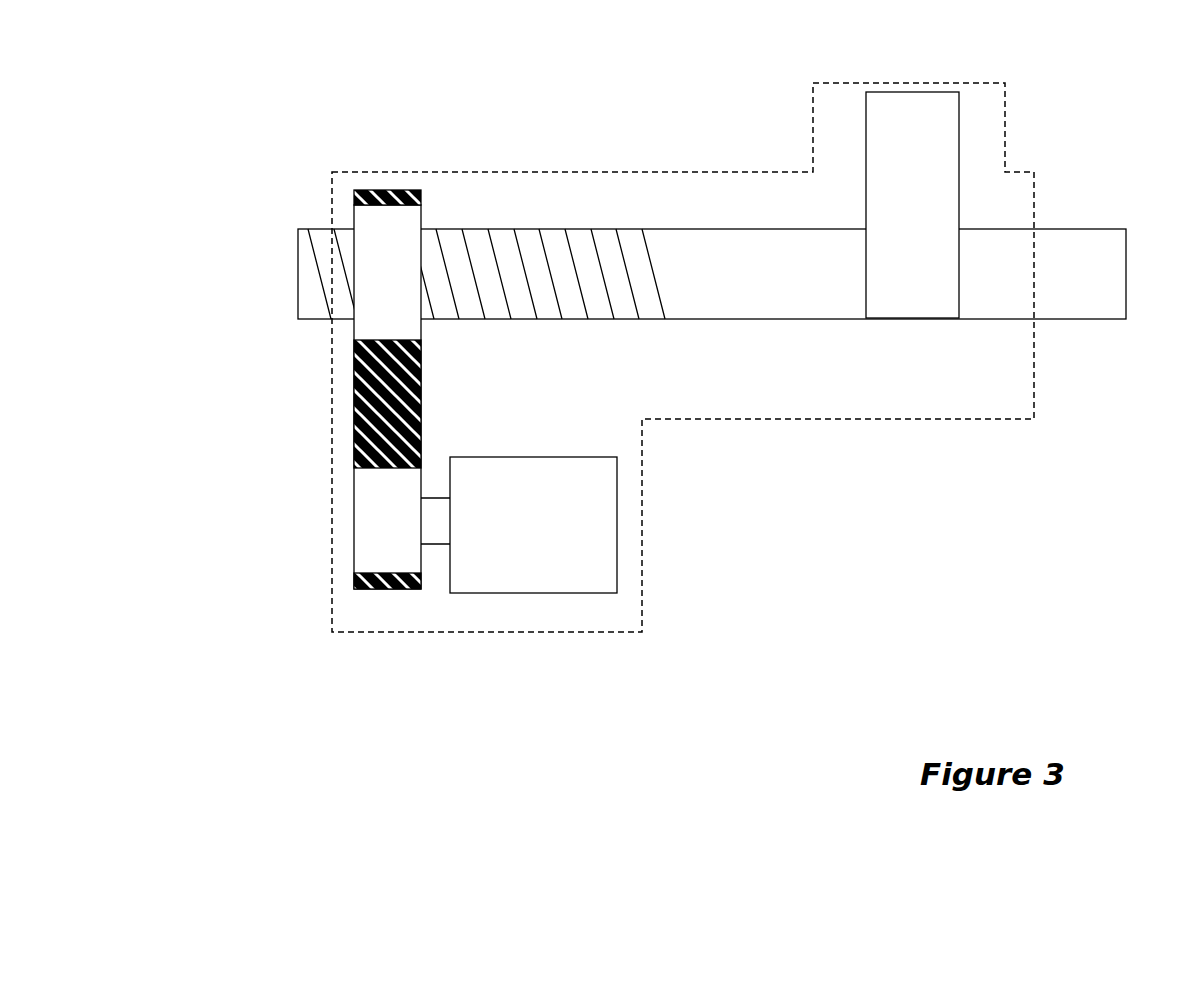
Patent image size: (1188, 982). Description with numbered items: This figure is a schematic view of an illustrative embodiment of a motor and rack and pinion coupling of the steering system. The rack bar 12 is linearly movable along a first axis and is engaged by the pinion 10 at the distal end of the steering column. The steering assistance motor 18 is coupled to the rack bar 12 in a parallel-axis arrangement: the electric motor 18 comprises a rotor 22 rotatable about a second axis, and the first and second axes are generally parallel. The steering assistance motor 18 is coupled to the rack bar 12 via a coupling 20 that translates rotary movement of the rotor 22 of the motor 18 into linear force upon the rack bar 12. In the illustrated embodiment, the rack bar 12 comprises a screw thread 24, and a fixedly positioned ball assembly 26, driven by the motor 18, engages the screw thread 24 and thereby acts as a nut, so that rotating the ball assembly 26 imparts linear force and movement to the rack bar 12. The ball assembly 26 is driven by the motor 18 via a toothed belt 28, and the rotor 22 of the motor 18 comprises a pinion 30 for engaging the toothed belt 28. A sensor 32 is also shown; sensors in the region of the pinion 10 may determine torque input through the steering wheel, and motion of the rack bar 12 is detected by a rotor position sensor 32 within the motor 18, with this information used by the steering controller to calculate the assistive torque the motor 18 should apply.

The pinion 10 is at (937, 258).
The rack bar 12 is at (711, 275).
The steering assistance motor 18 is at (553, 543).
The coupling 20 is at (285, 421).
The rotor 22 is at (435, 532).
The screw thread 24 is at (510, 205).
The ball assembly 26 is at (340, 203).
The toothed belt 28 is at (362, 448).
The pinion 30 is at (368, 532).
The sensor 32 is at (583, 495).